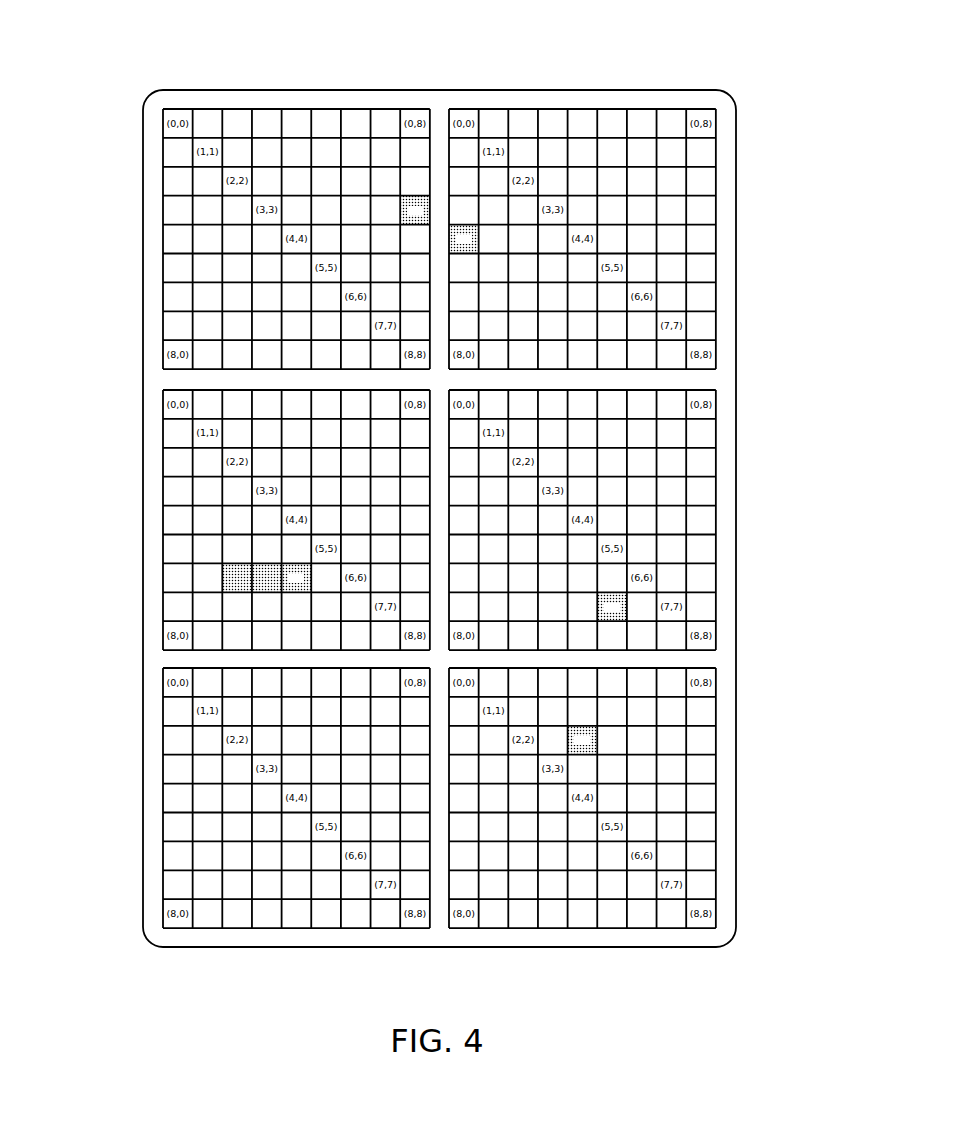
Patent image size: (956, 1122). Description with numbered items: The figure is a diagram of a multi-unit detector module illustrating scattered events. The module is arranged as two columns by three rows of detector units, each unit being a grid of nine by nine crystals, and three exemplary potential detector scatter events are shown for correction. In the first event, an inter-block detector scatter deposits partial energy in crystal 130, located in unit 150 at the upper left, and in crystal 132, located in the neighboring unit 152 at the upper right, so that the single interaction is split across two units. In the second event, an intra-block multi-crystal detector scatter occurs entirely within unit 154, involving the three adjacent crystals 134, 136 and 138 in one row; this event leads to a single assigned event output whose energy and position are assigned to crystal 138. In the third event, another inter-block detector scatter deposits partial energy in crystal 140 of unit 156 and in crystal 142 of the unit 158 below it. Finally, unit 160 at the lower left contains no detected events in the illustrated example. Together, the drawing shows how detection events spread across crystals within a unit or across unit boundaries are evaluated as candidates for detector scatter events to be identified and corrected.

The crystal (3,8) of Unit [0,0] 130 is at (415, 195).
The crystal (4,0) of Unit [0,1] 132 is at (463, 223).
The crystal (6,2) of Block [1,0] 134 is at (222, 577).
The crystal (6,3) of Block [1,0] 136 is at (269, 563).
The crystal (6,4) of Block [1,0] 138 is at (300, 591).
The crystal (7,5) of Unit [1,1] 140 is at (627, 605).
The crystal (4,0) of Unit [2,1] 142 is at (597, 738).
The unit [0,0] 150 is at (218, 87).
The unit [0,1] 152 is at (645, 82).
The unit [1,0] 154 is at (135, 448).
The unit [1,1] 156 is at (747, 448).
The unit [2,1] 158 is at (738, 863).
The unit [2,0] 160 is at (135, 865).